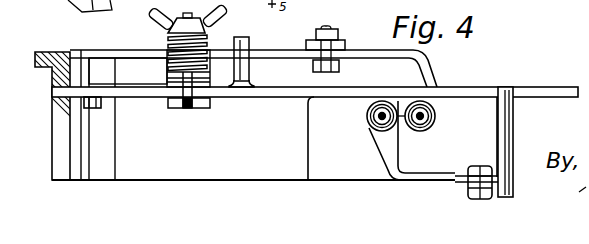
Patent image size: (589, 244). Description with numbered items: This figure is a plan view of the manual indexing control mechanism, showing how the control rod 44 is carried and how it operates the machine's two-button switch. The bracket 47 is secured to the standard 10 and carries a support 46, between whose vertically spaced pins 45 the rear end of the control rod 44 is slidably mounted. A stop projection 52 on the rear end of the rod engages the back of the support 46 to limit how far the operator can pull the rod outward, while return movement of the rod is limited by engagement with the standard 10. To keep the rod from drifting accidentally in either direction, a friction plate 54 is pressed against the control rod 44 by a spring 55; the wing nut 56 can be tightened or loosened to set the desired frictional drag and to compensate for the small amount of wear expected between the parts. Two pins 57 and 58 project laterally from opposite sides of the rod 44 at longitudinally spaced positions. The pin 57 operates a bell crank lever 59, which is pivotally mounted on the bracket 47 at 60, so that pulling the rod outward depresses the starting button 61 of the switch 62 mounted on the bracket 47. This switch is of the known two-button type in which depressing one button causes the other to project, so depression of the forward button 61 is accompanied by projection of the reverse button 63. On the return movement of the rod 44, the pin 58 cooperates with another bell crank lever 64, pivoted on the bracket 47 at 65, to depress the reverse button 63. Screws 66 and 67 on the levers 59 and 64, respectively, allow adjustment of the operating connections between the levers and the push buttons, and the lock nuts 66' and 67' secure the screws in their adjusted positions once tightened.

The standard 10 is at (53, 52).
The control rod 44 is at (566, 76).
The pins 45 is at (183, 108).
The support 46 is at (203, 110).
The bracket 47 is at (200, 173).
The stop projection 52 is at (98, 110).
The friction plate 54 is at (167, 79).
The spring 55 is at (205, 34).
The wing nut 56 is at (153, 29).
The pin 57 is at (250, 68).
The pin 58 is at (514, 134).
The bell crank lever 59 is at (303, 57).
The pivot 60 is at (328, 28).
The starting button 61 is at (438, 117).
The switch 62 is at (332, 170).
The button 63 is at (368, 128).
The bell crank lever 64 is at (454, 181).
The pivot 65 is at (484, 203).
The screw 66 is at (420, 133).
The lock nut 66' is at (445, 97).
The screw 67 is at (359, 116).
The lock nut 67' is at (383, 97).